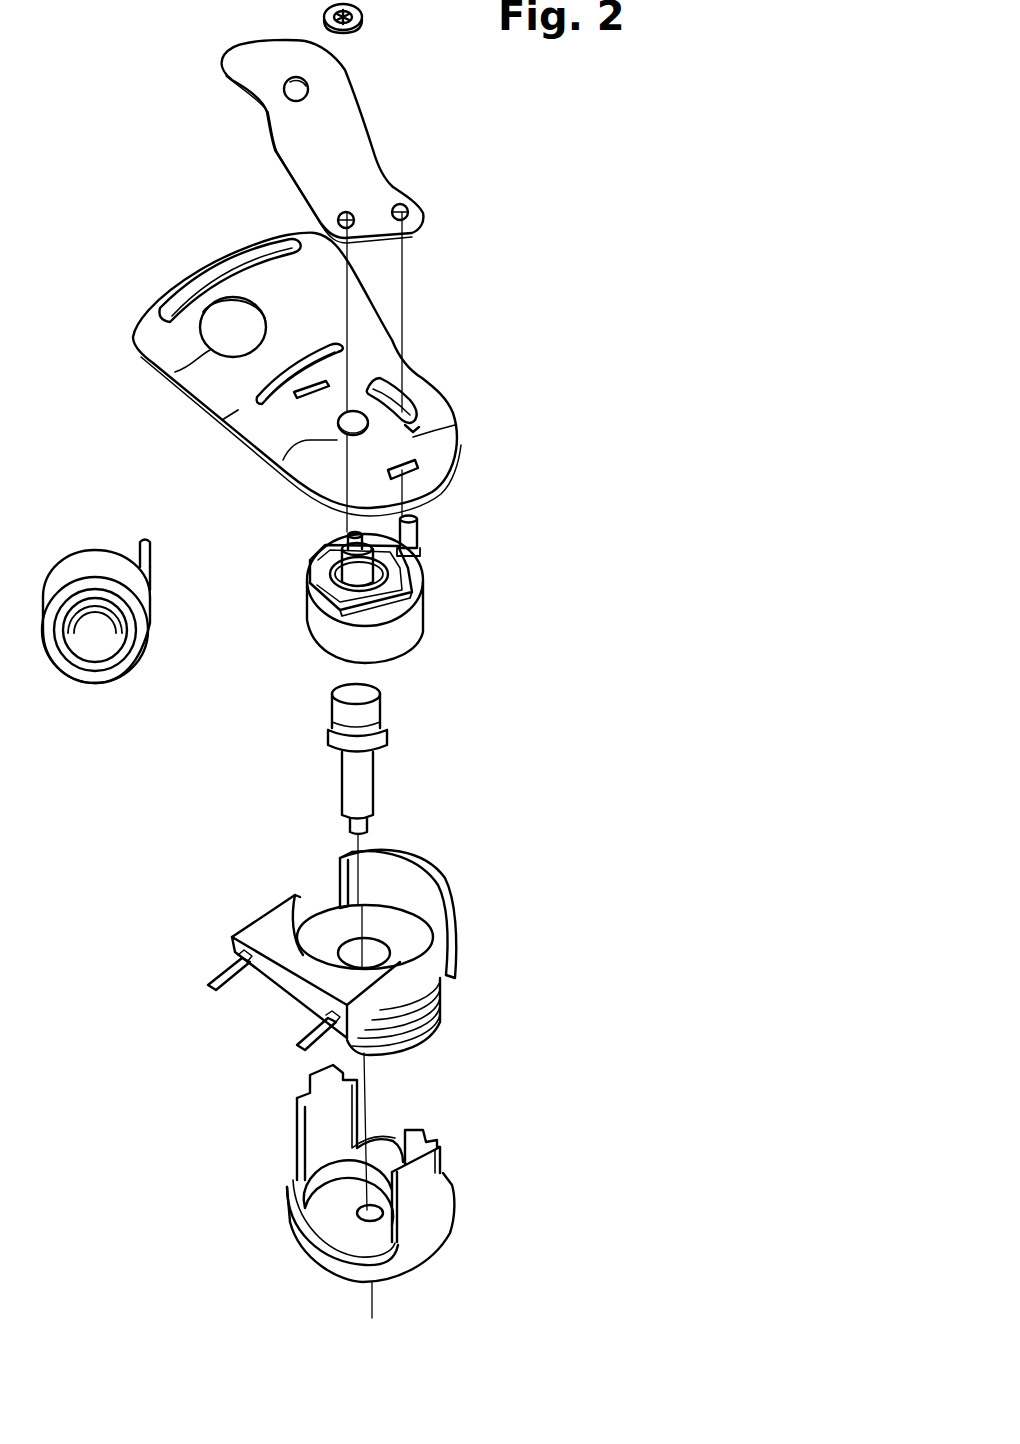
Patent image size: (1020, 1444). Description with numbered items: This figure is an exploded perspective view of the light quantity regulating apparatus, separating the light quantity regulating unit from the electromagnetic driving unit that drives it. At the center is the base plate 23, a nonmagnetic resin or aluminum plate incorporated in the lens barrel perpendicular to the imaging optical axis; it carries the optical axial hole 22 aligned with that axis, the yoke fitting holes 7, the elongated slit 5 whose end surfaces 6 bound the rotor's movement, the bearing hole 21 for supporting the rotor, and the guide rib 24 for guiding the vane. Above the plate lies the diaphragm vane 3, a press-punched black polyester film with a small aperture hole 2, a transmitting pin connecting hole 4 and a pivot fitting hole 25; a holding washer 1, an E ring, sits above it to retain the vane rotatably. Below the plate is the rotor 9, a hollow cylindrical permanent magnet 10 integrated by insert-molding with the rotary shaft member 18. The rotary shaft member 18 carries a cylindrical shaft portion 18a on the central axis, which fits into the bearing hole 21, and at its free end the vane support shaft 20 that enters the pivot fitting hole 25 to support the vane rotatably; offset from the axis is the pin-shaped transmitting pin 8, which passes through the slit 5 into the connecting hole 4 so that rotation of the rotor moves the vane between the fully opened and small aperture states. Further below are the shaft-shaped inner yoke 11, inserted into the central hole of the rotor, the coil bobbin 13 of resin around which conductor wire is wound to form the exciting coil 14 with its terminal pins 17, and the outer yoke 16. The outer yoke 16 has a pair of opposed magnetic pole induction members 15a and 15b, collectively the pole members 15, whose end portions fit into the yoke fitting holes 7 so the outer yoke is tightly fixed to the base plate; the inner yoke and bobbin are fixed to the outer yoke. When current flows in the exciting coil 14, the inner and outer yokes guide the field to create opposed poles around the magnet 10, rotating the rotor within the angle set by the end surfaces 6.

The holding washer 1 is at (362, 15).
The small aperture hole 2 is at (310, 92).
The diaphragm vane 3 is at (358, 160).
The transmitting pin connecting hole 4 is at (408, 217).
The slit 5 is at (410, 420).
The end surfaces 6 is at (413, 431).
The yoke fitting holes 7 is at (410, 487).
The transmitting pin 8 is at (420, 531).
The rotor 9 is at (448, 595).
The permanent magnet 10 is at (403, 637).
The inner yoke 11 is at (363, 797).
The coil bobbin 13 is at (453, 940).
The exciting coil 14 is at (440, 1003).
The yoke tabs 15 is at (408, 1130).
The magnetic pole induction member 15a is at (437, 1170).
The magnetic pole induction member 15b is at (297, 1113).
The outer yoke 16 is at (433, 1230).
The terminal pins 17 is at (220, 973).
The rotary shaft member 18 is at (313, 627).
The shaft portion 18a is at (355, 572).
The vane support shaft 20 is at (345, 548).
The bearing hole 21 is at (277, 475).
The optical axial hole 22 is at (172, 373).
The base plate 23 is at (233, 413).
The guide rib 24 is at (200, 280).
The pivot fitting hole 25 is at (338, 222).